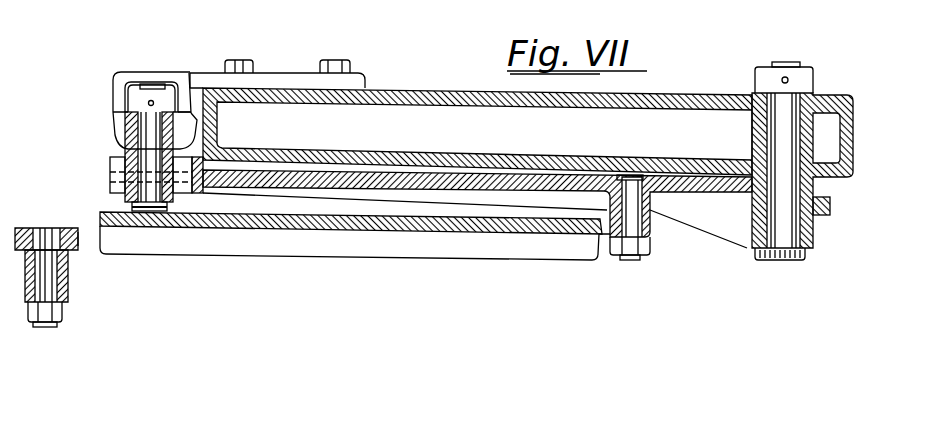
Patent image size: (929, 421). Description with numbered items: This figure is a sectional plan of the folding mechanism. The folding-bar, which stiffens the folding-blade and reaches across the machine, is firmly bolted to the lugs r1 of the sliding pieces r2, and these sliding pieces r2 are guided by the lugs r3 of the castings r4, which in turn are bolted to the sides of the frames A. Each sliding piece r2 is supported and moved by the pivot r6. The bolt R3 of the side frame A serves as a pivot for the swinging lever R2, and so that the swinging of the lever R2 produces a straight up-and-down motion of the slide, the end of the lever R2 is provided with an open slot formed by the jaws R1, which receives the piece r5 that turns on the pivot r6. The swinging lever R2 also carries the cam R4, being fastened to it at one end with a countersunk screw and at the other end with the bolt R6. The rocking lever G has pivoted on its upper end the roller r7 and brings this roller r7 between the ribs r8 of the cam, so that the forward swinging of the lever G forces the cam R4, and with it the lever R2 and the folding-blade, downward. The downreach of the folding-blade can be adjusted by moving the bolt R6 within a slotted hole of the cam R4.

The frame A is at (477, 131).
The lug r1 is at (119, 127).
The sliding piece r2 is at (127, 138).
The lug r3 is at (182, 120).
The casting r4 is at (275, 85).
The piece r5 is at (124, 188).
The pivot r6 is at (154, 90).
The roller r7 is at (86, 246).
The rib r8 is at (412, 253).
The jaw R1 is at (112, 165).
The swinging lever R2 is at (520, 200).
The bolt R3 is at (790, 228).
The cam R4 is at (317, 228).
The bolt R6 is at (634, 259).
The rocking lever G is at (66, 295).